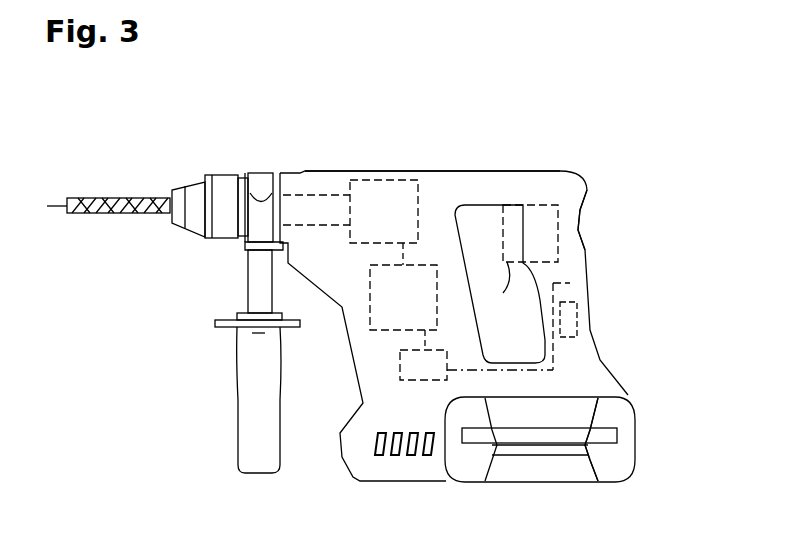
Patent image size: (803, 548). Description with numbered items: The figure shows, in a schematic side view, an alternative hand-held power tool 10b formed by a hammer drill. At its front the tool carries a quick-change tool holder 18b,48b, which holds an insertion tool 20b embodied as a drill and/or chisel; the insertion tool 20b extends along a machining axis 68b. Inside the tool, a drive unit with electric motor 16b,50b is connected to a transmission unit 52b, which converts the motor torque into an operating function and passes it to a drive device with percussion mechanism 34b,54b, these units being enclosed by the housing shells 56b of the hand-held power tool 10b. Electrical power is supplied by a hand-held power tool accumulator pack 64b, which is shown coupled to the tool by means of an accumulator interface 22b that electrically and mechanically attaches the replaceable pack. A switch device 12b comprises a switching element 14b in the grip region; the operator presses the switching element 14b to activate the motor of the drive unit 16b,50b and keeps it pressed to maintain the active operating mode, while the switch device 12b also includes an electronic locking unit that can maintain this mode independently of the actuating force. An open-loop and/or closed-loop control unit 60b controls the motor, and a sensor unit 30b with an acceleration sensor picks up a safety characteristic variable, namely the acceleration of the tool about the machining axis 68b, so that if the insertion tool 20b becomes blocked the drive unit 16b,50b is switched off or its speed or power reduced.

The hand-held power tool 10b is at (573, 114).
The machining axis 68b is at (60, 185).
The insertion tool 20b is at (172, 182).
The quick-change tool holder / tool holder 18b,48b is at (227, 177).
The percussion mechanism / drive device 34b,54b is at (320, 195).
The transmission unit 52b is at (384, 180).
The drive unit / electric motor 16b,50b is at (370, 315).
The open-loop and/or closed-loop control unit 60b is at (425, 380).
The switching element 14b is at (510, 290).
The sensor unit 30b is at (580, 323).
The housing shells 56b is at (570, 192).
The switch device 12b is at (558, 232).
The accumulator interface 22b is at (628, 395).
The hand-held power tool accumulator pack 64b is at (617, 460).